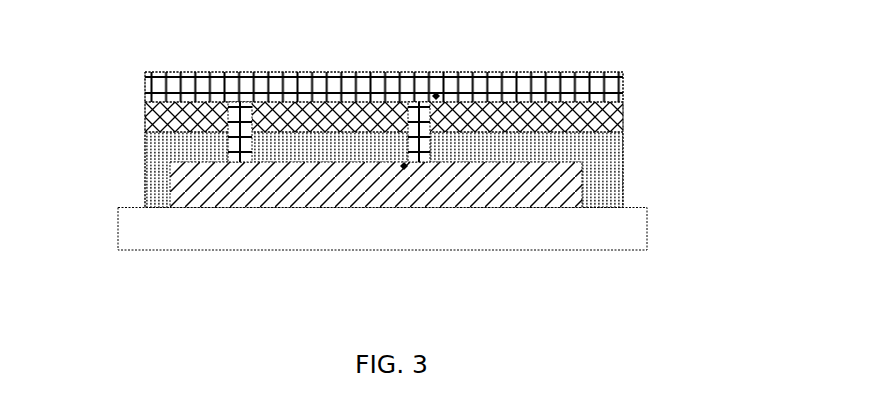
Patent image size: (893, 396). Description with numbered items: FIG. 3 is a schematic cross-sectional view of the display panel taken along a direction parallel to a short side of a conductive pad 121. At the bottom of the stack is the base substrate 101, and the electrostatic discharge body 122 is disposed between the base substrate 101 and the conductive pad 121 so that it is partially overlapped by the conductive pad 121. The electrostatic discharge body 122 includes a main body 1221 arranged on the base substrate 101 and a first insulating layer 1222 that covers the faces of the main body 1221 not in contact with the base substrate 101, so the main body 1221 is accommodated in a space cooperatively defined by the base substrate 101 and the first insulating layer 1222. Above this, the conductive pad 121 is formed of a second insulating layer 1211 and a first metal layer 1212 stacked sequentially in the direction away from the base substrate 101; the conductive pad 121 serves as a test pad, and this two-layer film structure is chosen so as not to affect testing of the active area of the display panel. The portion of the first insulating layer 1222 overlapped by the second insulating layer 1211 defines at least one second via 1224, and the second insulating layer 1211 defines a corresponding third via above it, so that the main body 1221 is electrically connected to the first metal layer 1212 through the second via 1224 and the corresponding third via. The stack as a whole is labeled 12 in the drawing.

The light emitting module 12 is at (440, 88).
The conductive pad 121 is at (458, 107).
The first metal layer 1212 is at (623, 80).
The second insulating layer 1211 is at (623, 125).
The electrostatic discharge body 122 is at (325, 172).
The first insulating layer 1222 is at (173, 148).
The main body 1221 is at (187, 181).
The second via 1224 is at (402, 171).
The base substrate 101 is at (247, 229).